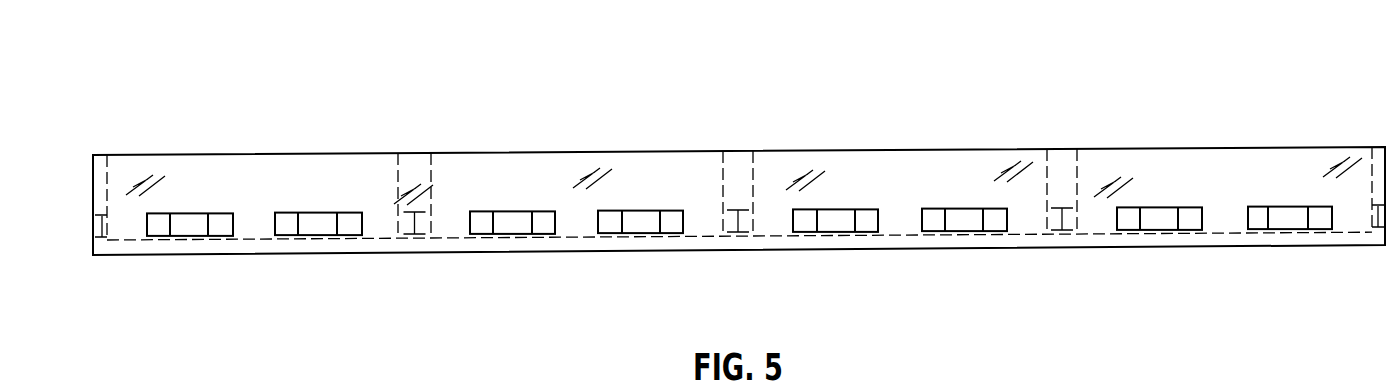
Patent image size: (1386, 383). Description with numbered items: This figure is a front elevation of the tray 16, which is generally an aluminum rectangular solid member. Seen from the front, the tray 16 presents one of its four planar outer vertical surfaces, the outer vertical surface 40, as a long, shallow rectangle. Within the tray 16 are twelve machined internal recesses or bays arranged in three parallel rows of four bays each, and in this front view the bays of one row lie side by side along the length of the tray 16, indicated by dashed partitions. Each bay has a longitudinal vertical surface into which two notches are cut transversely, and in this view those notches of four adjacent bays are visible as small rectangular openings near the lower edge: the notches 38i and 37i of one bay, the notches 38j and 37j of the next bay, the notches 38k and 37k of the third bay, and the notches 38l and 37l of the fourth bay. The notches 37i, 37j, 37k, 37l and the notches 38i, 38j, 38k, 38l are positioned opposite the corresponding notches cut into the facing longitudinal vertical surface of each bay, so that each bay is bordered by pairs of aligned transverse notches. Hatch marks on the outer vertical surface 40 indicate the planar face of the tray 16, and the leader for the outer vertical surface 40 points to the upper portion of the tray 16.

The tray 16 is at (1212, 104).
The outer vertical surface 40 is at (915, 172).
The notch 37i is at (316, 227).
The notch 38i is at (188, 228).
The notch 37j is at (638, 225).
The notch 38j is at (510, 226).
The notch 37k is at (962, 223).
The notch 38k is at (834, 224).
The notch 37l is at (1288, 221).
The notch 38l is at (1158, 222).